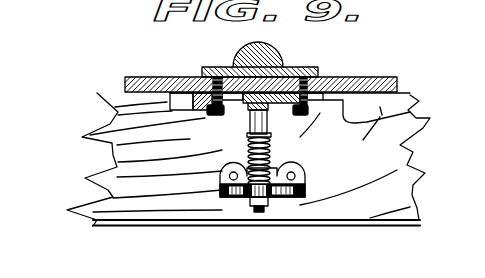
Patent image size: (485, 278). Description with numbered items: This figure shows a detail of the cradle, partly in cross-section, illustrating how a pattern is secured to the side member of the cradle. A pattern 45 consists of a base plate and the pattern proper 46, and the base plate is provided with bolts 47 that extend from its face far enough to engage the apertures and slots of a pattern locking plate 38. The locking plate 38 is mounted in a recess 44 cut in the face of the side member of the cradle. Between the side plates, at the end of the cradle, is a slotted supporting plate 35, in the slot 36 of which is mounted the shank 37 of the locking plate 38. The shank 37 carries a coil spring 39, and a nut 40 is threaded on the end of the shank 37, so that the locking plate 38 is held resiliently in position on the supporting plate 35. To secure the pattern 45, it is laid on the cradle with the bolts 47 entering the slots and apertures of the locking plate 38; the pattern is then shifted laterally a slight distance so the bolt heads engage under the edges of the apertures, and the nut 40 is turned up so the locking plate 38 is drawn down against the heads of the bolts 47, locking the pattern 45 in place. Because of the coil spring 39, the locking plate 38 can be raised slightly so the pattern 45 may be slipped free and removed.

The slotted supporting plate 35 is at (302, 197).
The slot 36 is at (283, 197).
The shank 37 is at (272, 149).
The pattern locking plate 38 is at (248, 121).
The coil spring 39 is at (275, 164).
The nut 40 is at (244, 197).
The recess 44 is at (412, 103).
The pattern 45 is at (367, 77).
The pattern proper 46 is at (285, 61).
The bolt 47 is at (207, 117).